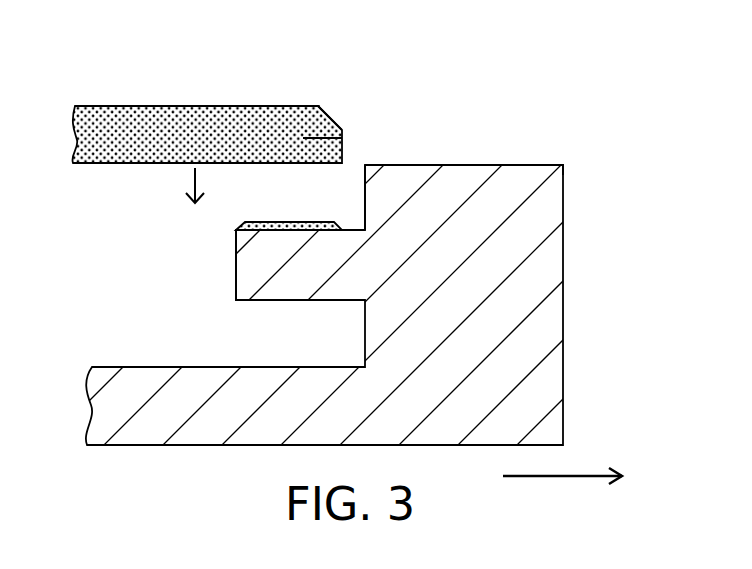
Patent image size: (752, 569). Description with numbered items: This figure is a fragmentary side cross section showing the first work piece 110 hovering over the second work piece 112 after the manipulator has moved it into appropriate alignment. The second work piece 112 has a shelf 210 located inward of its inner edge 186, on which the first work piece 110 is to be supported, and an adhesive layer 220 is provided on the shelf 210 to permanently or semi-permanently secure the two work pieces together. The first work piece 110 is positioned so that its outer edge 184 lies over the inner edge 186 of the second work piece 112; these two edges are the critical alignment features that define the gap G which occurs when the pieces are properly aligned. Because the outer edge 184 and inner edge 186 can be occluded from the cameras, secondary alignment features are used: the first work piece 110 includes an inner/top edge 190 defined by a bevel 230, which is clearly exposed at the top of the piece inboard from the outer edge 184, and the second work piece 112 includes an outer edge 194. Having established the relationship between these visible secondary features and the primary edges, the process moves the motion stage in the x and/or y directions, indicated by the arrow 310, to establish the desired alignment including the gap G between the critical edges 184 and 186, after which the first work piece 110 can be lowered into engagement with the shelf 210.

The first work piece 110 is at (172, 106).
The outer edge 184 is at (303, 138).
The inner/top edge 190 is at (325, 110).
The bevel 230 is at (329, 108).
The gap G is at (352, 163).
The inner edge 186 is at (365, 188).
The outer edge 194 is at (563, 172).
The second work piece 112 is at (565, 215).
The shelf 210 is at (245, 241).
The adhesive layer 220 is at (300, 232).
The arrow 310 is at (570, 477).